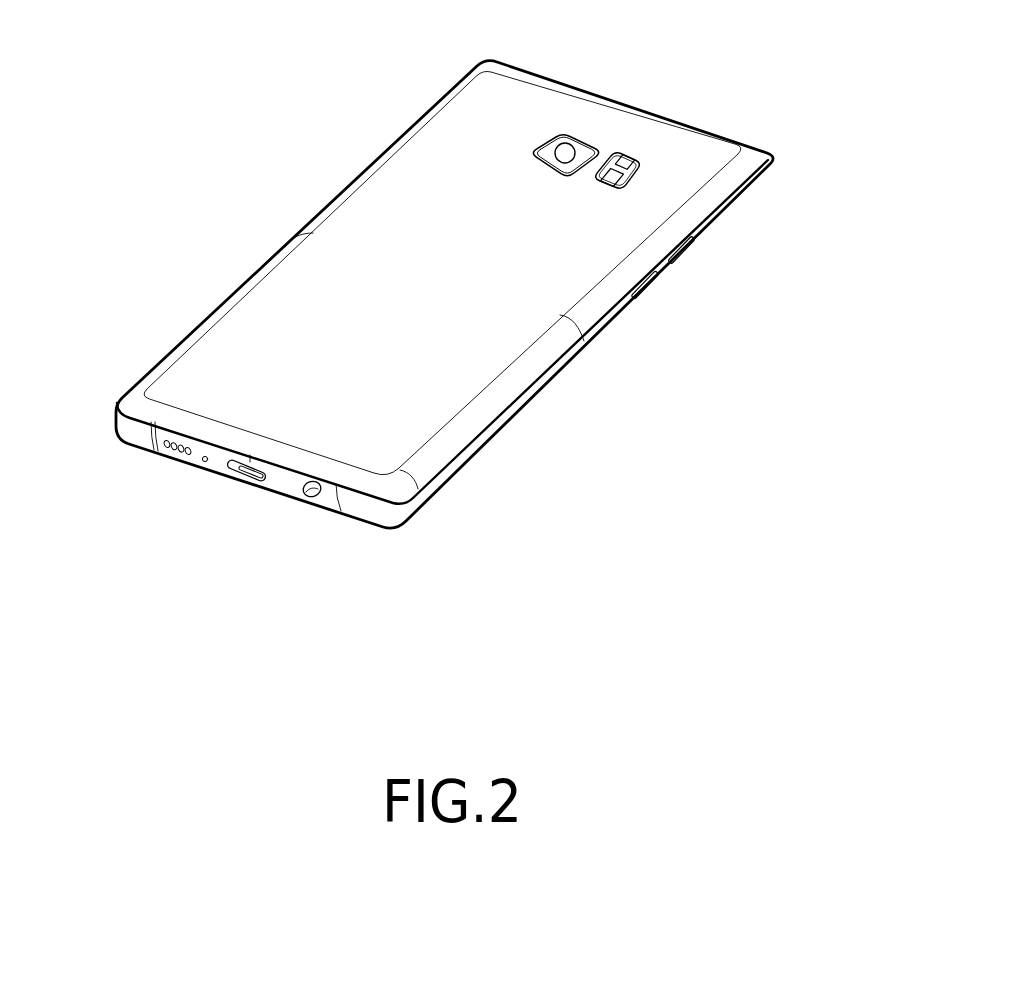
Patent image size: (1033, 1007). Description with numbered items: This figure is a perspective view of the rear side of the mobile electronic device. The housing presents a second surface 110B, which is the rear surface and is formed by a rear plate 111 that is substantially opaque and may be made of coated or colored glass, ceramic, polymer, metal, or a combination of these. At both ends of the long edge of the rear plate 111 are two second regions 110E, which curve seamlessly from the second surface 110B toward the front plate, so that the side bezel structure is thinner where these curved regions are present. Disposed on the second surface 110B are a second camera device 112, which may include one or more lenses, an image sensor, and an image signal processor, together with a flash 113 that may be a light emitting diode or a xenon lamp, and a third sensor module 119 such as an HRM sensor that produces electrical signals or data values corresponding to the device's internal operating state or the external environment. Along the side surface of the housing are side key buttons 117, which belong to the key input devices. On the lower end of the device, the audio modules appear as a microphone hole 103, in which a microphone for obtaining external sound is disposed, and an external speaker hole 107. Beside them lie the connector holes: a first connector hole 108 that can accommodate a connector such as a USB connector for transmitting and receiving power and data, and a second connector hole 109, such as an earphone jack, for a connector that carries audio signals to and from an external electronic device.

The microphone hole 103 is at (204, 461).
The external speaker hole 107 is at (165, 452).
The first connector hole 108 is at (244, 468).
The second connector hole 109 is at (311, 492).
The second surface 110B is at (427, 229).
The second regions 110E is at (292, 246).
The rear plate 111 is at (240, 357).
The second camera device 112 is at (566, 150).
The flash 113 is at (623, 158).
The side key buttons 117 is at (688, 253).
The third sensor module 119 is at (612, 179).